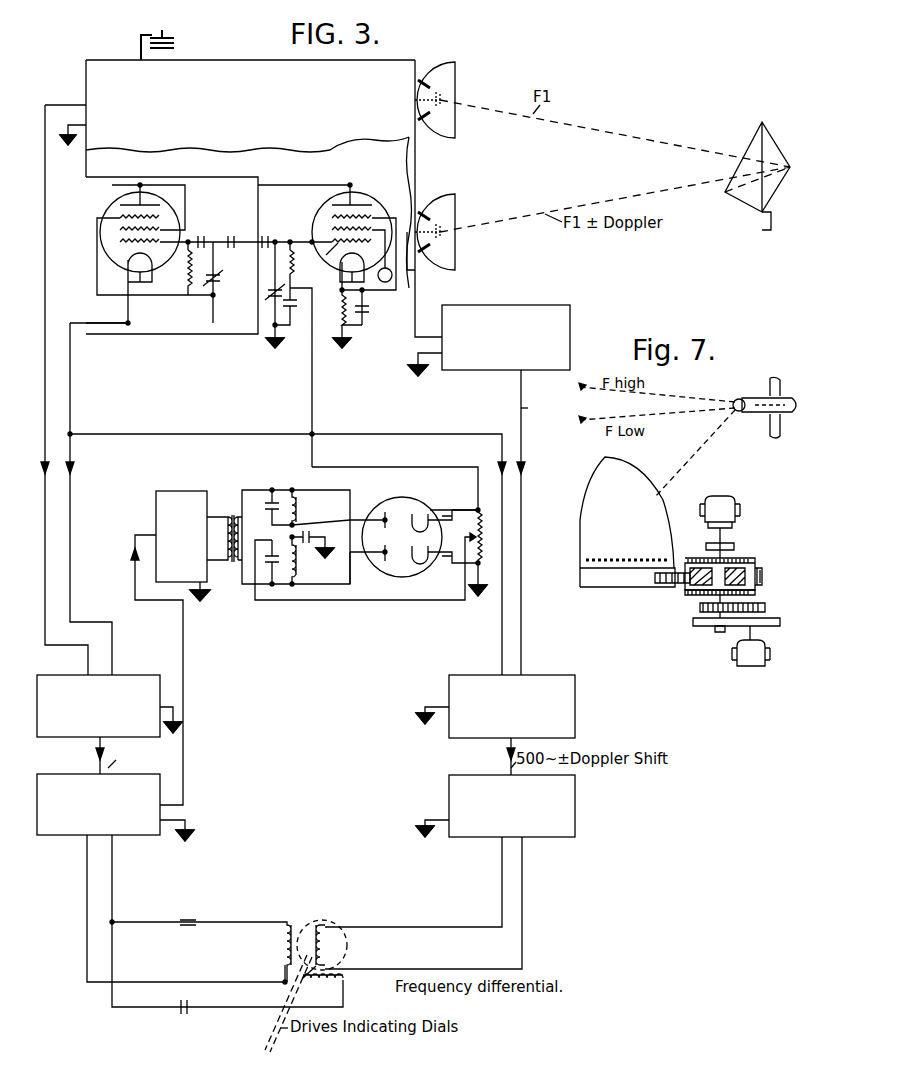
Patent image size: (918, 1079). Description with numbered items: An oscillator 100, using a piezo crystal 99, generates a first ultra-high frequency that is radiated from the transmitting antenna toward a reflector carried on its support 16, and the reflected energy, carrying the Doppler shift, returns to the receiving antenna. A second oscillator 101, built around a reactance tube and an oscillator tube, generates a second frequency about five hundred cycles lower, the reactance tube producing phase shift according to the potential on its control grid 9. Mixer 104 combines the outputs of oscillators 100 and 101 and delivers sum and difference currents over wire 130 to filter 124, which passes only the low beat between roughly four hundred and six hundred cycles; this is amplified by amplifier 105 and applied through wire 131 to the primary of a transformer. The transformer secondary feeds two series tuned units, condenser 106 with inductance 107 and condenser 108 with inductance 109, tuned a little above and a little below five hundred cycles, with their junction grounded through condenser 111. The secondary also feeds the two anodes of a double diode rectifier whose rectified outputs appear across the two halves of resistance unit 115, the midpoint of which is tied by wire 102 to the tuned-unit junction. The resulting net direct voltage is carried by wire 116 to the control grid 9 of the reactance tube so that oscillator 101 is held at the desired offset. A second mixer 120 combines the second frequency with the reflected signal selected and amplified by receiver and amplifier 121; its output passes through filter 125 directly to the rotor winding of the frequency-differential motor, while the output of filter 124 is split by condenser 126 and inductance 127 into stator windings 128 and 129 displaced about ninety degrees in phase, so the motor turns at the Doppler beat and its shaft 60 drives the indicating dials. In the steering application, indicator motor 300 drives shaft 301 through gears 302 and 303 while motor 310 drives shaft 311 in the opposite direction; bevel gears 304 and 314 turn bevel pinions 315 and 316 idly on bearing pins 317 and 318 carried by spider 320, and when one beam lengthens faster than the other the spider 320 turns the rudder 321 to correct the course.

In FIG. 3, the reactance tube cathode connection 9 is at (330, 260).
In FIG. 3, the reflector support post 16 is at (760, 220).
In FIG. 3, the shaft driving indicating dials 60 is at (272, 1030).
In FIG. 3, the piezo crystal 99 is at (164, 40).
In FIG. 3, the oscillator 100 is at (178, 64).
In FIG. 3, the second oscillator 101 is at (258, 182).
In FIG. 3, the wire 102 is at (286, 600).
In FIG. 3, the mixer 104 is at (130, 670).
In FIG. 3, the amplifier 105 is at (182, 494).
In FIG. 3, the condenser of tuned unit 106 is at (272, 508).
In FIG. 3, the inductance of tuned unit 107 is at (296, 508).
In FIG. 3, the condenser of tuned unit 108 is at (266, 568).
In FIG. 3, the inductance of tuned unit 109 is at (296, 565).
In FIG. 3, the condenser 111 is at (305, 537).
In FIG. 3, the resistance unit 115 is at (478, 537).
In FIG. 3, the wire 116 is at (478, 492).
In FIG. 3, the second mixer 120 is at (540, 678).
In FIG. 3, the receiver and amplifier 121 is at (494, 312).
In FIG. 3, the filter 124 is at (62, 778).
In FIG. 3, the filter 125 is at (575, 818).
In FIG. 3, the condenser 126 is at (180, 1012).
In FIG. 3, the inductance 127 is at (215, 921).
In FIG. 3, the stator winding 128 is at (300, 918).
In FIG. 3, the stator winding 129 is at (338, 975).
In FIG. 3, the wire 130 is at (100, 756).
In FIG. 3, the wire 131 is at (183, 625).
In FIG. 7, the indicator motor 300 is at (745, 658).
In FIG. 7, the shaft 301 is at (712, 628).
In FIG. 7, the gear 302 is at (765, 608).
In FIG. 7, the gear 303 is at (706, 626).
In FIG. 7, the bevel gear 304 is at (700, 604).
In FIG. 7, the motor 310 is at (728, 508).
In FIG. 7, the shaft 311 is at (726, 545).
In FIG. 7, the bevel gear 314 is at (742, 563).
In FIG. 7, the bevel pinion 315 is at (752, 573).
In FIG. 7, the bevel pinion 316 is at (694, 590).
In FIG. 7, the bearing pin 317 is at (764, 578).
In FIG. 7, the bearing pin 318 is at (655, 578).
In FIG. 7, the spider 320 is at (692, 562).
In FIG. 7, the rudder 321 is at (650, 478).